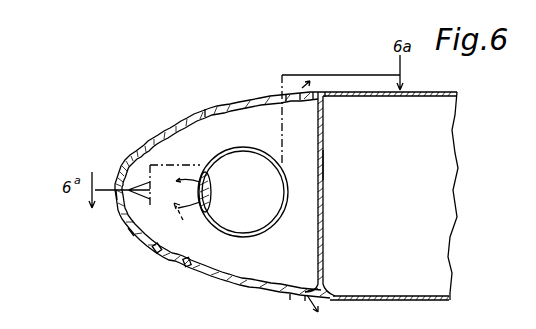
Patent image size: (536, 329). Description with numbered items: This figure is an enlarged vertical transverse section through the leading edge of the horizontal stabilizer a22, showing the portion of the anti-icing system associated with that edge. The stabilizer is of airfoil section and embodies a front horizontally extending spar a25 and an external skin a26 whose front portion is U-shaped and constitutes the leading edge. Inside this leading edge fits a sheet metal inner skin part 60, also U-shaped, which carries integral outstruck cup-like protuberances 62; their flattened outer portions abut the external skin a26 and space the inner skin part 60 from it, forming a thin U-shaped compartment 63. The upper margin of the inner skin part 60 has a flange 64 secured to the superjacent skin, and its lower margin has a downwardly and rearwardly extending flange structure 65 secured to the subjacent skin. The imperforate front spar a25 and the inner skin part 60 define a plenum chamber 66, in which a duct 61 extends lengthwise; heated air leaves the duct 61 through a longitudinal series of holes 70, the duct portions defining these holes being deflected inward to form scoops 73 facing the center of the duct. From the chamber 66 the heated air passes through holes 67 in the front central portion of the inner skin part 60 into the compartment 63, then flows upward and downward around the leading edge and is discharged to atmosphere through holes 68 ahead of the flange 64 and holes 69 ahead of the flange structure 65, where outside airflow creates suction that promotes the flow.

The inner skin part 60 is at (180, 134).
The duct 61 is at (288, 207).
The cup-like protuberances 62 is at (187, 261).
The compartment 63 is at (137, 236).
The flange 64 is at (315, 92).
The flange structure 65 is at (312, 287).
The plenum chamber 66 is at (295, 234).
The holes 67 is at (118, 196).
The holes 68 is at (293, 93).
The holes 69 is at (295, 298).
The holes 70 is at (179, 223).
The scoops 73 is at (205, 201).
The horizontal stabilizer a22 is at (435, 83).
The front spar a25 is at (323, 166).
The external skin a26 is at (211, 108).